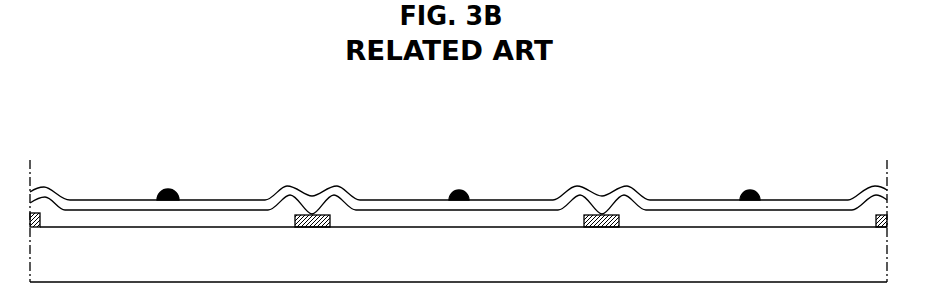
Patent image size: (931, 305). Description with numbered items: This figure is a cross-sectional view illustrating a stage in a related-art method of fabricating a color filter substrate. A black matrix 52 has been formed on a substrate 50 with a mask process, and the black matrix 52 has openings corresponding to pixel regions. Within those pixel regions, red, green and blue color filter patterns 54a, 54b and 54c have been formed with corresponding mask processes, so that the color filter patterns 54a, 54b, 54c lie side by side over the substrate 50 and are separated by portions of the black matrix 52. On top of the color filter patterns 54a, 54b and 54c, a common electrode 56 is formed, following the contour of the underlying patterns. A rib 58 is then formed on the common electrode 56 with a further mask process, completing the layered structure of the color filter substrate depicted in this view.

The substrate 50 is at (855, 269).
The black matrix 52 is at (312, 214).
The red color filter pattern 54a is at (100, 211).
The green color filter pattern 54b is at (395, 211).
The blue color filter pattern 54c is at (688, 211).
The common electrode 56 is at (252, 199).
The rib 58 is at (168, 189).